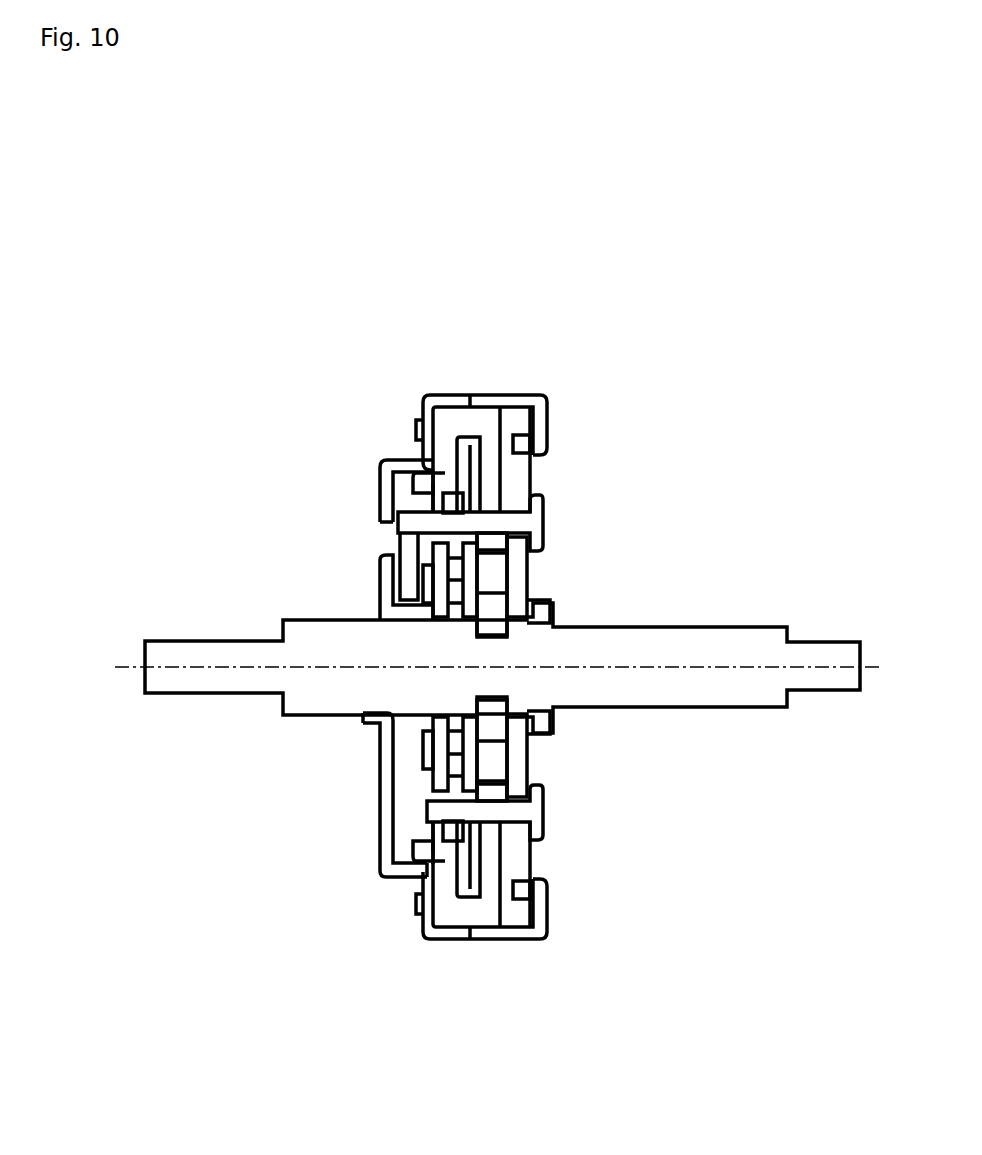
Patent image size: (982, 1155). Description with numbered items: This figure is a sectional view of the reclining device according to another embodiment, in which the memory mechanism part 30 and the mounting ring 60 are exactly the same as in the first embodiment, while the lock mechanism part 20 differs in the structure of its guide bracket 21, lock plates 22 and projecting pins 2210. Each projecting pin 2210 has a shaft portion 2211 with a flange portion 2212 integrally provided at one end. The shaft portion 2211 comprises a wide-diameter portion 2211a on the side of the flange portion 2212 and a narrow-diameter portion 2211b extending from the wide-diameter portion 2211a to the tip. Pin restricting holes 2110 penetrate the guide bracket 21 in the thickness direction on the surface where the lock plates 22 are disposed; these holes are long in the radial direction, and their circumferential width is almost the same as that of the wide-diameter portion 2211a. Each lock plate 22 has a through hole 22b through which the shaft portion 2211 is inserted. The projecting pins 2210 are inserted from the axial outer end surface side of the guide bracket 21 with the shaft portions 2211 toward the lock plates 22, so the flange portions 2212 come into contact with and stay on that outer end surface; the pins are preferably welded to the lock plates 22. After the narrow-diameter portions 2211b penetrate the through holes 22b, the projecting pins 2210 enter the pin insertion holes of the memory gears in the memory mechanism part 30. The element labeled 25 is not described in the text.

The lock mechanism part 20 is at (278, 352).
The guide bracket 21 is at (520, 858).
The lock plate 22 is at (492, 482).
The through hole 22b is at (497, 523).
The shaft 25 is at (735, 638).
The memory mechanism part 30 is at (517, 392).
The mounting ring 60 is at (548, 912).
The pin restricting hole 2110 is at (520, 548).
The projecting pin 2210 is at (378, 515).
The shaft portion 2211 is at (413, 512).
The wide-diameter portion 2211a is at (433, 512).
The narrow-diameter portion 2211b is at (533, 490).
The flange portion 2212 is at (545, 519).